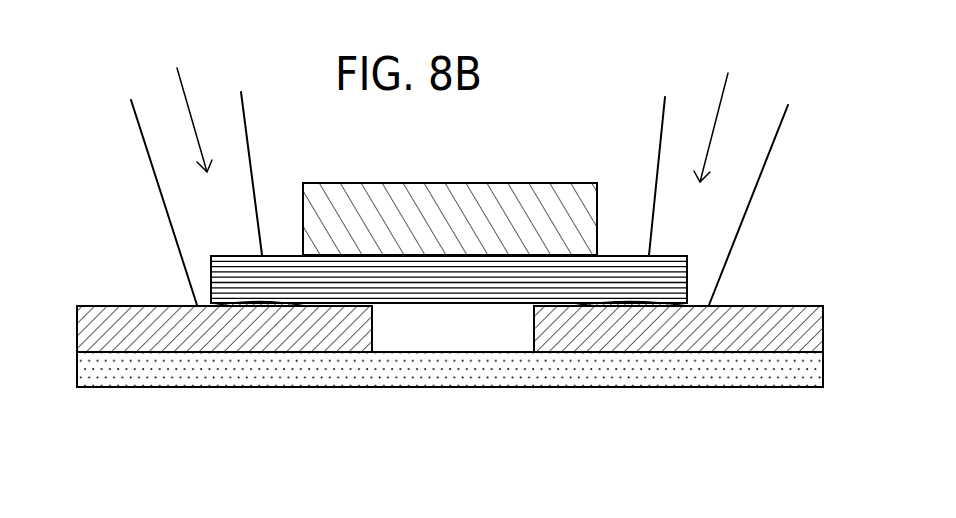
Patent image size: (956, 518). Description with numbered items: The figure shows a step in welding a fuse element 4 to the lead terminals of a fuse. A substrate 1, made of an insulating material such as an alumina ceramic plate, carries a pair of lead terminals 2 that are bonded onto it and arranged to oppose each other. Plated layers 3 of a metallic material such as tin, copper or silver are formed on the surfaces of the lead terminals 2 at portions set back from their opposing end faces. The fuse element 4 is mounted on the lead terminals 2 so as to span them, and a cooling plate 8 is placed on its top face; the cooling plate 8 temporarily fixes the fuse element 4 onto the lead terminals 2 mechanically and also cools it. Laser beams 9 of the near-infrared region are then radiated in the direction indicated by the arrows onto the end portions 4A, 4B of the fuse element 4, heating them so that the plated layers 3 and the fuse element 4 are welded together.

The substrate 1 is at (722, 373).
The lead terminals 2 is at (119, 325).
The plated layers 3 is at (245, 315).
The fuse element 4 is at (500, 282).
The end portion of fuse element 4A is at (227, 280).
The end portion of fuse element 4B is at (675, 273).
The cooling plate 8 is at (562, 223).
The laser beams 9 is at (160, 143).